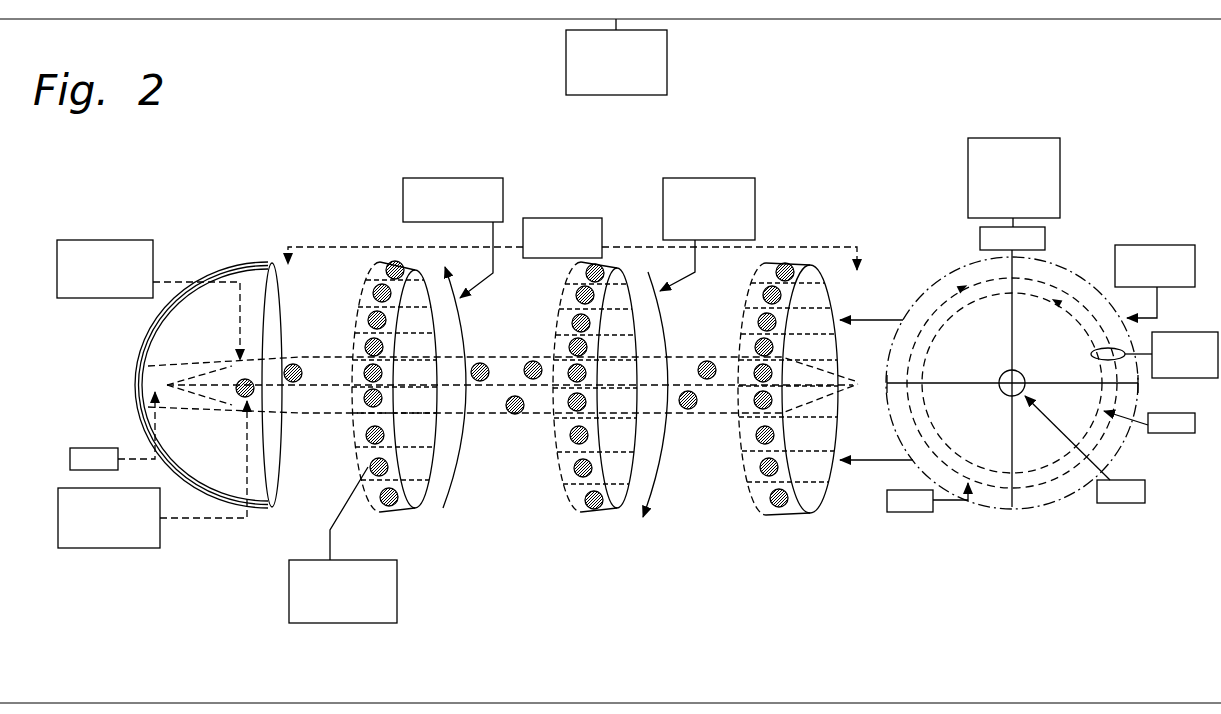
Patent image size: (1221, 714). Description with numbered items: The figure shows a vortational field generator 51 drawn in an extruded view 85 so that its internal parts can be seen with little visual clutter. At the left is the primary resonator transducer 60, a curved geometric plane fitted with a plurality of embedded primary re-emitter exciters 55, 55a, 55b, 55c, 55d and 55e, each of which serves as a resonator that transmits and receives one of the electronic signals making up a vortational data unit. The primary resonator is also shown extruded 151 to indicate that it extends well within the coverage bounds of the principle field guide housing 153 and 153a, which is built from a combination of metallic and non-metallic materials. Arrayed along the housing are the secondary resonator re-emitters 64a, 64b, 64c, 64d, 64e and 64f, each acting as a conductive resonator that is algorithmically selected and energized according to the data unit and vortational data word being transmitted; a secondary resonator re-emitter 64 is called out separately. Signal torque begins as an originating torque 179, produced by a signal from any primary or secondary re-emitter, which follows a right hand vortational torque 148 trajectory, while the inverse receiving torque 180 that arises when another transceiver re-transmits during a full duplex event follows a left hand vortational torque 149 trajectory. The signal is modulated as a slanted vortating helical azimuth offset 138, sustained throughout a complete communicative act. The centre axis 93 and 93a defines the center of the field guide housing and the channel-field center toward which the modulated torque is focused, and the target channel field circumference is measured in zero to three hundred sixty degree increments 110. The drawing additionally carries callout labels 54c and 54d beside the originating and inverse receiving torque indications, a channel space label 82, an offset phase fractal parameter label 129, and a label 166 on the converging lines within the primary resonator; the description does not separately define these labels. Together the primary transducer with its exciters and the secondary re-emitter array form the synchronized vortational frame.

The vortational field generator 51 is at (667, 50).
The Originating Torque 54c is at (466, 178).
The originating torque 179 is at (403, 207).
The extruded view 85 is at (590, 218).
The Inverse Receiving Torque 54d is at (750, 178).
The inverse receiving torque 180 is at (755, 213).
The field guide housing 153 is at (261, 260).
The primary resonator transducer 60 is at (118, 240).
The focal cone 166 is at (192, 360).
The primary re-emitter exciter 55 is at (58, 497).
The centre axis 93 is at (70, 462).
The secondary resonator re-emitter 64 is at (289, 568).
The secondary resonator re-emitter 64a is at (392, 264).
The secondary resonator re-emitter 64b is at (582, 290).
The secondary resonator re-emitter 64c is at (370, 433).
The secondary resonator re-emitter 64d is at (575, 433).
The secondary resonator re-emitter 64e is at (763, 315).
The secondary resonator re-emitter 64f is at (760, 440).
The primary re-emitter exciter 55a is at (312, 345).
The primary re-emitter exciter 55b is at (512, 412).
The primary re-emitter exciter 55c is at (538, 365).
The primary re-emitter exciter 55d is at (712, 365).
The primary re-emitter exciter 55e is at (716, 420).
The field guide housing 153a is at (829, 387).
The extrusion of primary resonator 151 is at (856, 383).
The Offset Phase Fractal Parameter 129 is at (968, 183).
The zero to 360 degree increments 110 is at (980, 238).
The Channel Space 82 is at (1157, 245).
The slanted vortating helical azimuth offset 138 is at (1212, 332).
The left hand vortational torque 149 is at (1190, 433).
The centre axis 93a is at (1145, 497).
The right hand vortational torque 148 is at (910, 512).